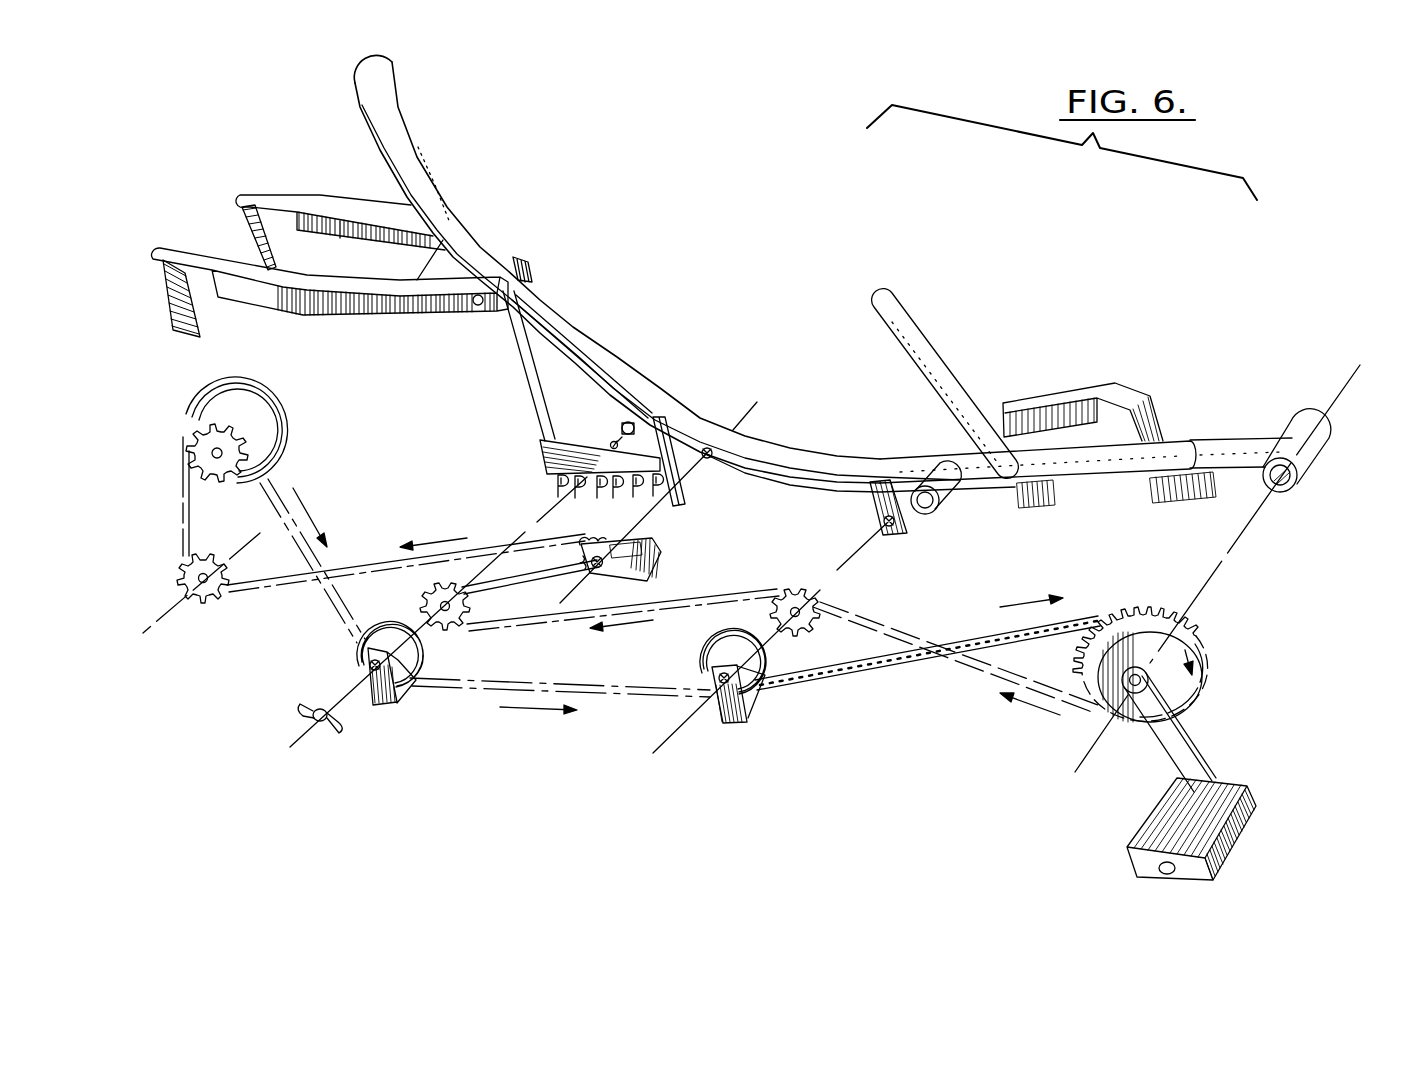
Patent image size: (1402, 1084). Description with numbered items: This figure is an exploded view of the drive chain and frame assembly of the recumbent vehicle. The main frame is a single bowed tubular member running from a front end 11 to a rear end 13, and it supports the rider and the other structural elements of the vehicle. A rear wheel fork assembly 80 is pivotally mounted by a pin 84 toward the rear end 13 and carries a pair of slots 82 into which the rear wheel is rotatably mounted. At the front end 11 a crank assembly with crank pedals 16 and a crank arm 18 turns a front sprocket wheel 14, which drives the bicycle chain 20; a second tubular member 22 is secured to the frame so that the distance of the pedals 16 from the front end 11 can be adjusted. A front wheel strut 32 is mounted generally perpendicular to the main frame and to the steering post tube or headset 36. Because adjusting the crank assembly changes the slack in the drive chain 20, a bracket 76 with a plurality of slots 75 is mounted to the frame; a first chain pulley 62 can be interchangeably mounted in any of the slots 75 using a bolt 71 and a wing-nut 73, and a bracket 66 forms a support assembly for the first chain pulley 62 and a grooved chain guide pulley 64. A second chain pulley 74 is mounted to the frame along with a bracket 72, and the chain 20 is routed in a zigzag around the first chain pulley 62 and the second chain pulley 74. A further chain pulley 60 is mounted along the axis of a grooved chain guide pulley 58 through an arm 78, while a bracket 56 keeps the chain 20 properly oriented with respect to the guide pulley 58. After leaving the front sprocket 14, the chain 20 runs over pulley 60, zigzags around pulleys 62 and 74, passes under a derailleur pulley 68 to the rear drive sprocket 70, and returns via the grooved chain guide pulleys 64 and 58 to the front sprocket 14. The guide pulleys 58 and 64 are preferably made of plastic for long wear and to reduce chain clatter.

The front end 11 is at (1193, 430).
The rear end 13 is at (400, 79).
The front sprocket wheel 14 is at (1193, 644).
The crank pedals 16 is at (1253, 800).
The crank arm 18 is at (1203, 748).
The drive chain 20 is at (903, 664).
The second tubular member 22 is at (1250, 440).
The front wheel strut 32 is at (1097, 393).
The steering post tube or headset 36 is at (922, 328).
The bracket 56 is at (742, 727).
The grooved chain guide pulley 58 is at (763, 658).
The chain pulley 60 is at (807, 593).
The first chain pulley 62 is at (475, 608).
The grooved chain guide pulley 64 is at (418, 657).
The bracket 66 is at (400, 707).
The derailleur pulley 68 is at (207, 603).
The rear drive sprocket 70 is at (282, 422).
The bolt 71 is at (630, 421).
The bracket 72 is at (660, 552).
The wing-nut 73 is at (340, 734).
The second chain pulley 74 is at (593, 540).
The slots 75 is at (650, 500).
The bracket 76 is at (540, 453).
The arm 78 is at (903, 533).
The rear wheel fork assembly 80 is at (394, 313).
The slots 82 is at (160, 258).
The pin 84 is at (477, 306).